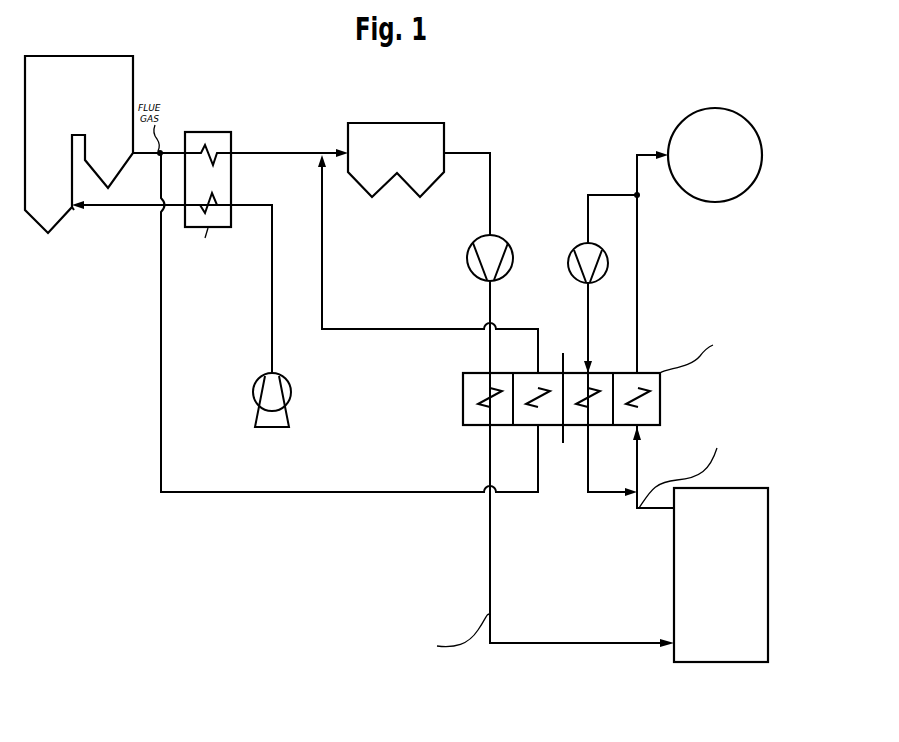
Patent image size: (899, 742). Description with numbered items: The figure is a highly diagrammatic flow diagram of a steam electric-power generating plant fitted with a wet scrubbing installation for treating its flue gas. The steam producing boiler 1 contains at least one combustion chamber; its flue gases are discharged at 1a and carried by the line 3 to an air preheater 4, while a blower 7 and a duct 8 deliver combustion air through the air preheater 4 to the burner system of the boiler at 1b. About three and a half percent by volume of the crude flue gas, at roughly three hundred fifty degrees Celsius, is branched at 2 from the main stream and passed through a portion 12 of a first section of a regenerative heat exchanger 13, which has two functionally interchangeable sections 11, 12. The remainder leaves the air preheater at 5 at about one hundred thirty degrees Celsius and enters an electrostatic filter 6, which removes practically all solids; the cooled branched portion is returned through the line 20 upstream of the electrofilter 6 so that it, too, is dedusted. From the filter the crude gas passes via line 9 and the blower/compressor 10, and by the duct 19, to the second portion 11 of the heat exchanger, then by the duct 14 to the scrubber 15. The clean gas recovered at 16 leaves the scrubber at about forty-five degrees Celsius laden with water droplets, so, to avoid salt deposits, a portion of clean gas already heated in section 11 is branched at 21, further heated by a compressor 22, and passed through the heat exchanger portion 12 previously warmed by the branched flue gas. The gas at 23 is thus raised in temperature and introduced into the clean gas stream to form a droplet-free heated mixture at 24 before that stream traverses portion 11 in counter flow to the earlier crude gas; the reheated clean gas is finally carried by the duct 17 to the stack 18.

The boiler 1 is at (122, 83).
The flue gas discharge 1a is at (133, 156).
The combustion air inlet 1b is at (77, 207).
The branch point 2 is at (161, 250).
The flue gas line 3 is at (173, 151).
The air preheater 4 is at (212, 135).
The air preheater outlet 5 is at (263, 150).
The electrostatic filter 6 is at (389, 133).
The blower 7 is at (290, 380).
The duct 8 is at (272, 222).
The line 9 is at (462, 150).
The blower/compressor 10 is at (510, 243).
The heat exchanger section 11 is at (470, 394).
The heat exchanger portion 12 is at (527, 418).
The regenerative heat exchanger 13 is at (547, 372).
The duct 14 is at (490, 569).
The scrubber 15 is at (723, 655).
The clean gas recovery point 16 is at (648, 512).
The duct 17 is at (637, 257).
The stack 18 is at (690, 133).
The duct 19 is at (483, 295).
The line 20 is at (322, 295).
The branch point 21 is at (605, 190).
The compressor 22 is at (568, 255).
The heated gas outlet 23 is at (588, 480).
The heated mixture point 24 is at (637, 468).